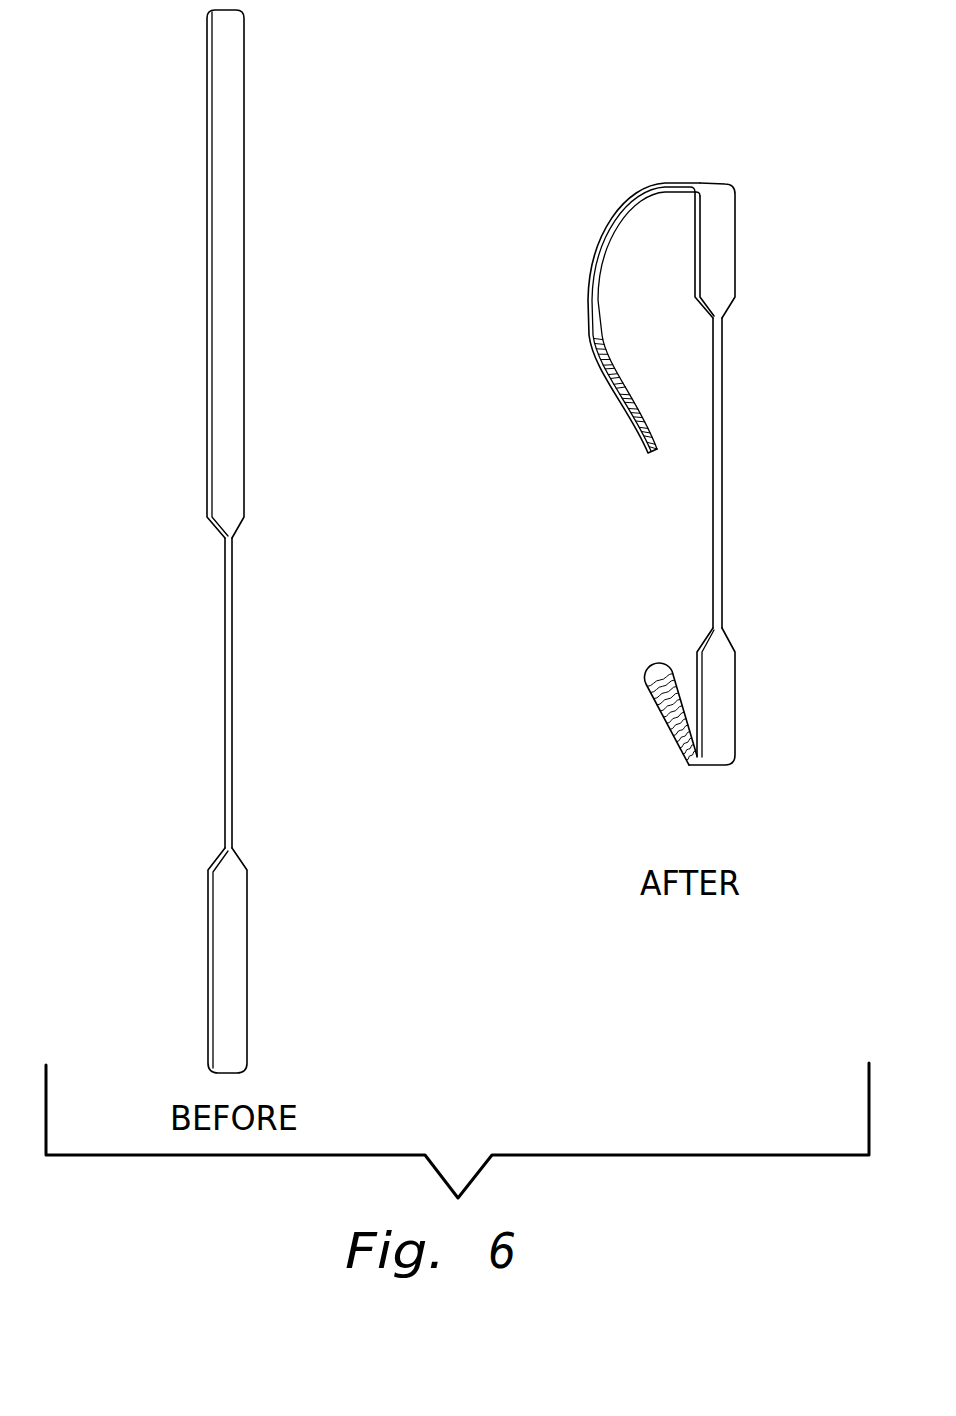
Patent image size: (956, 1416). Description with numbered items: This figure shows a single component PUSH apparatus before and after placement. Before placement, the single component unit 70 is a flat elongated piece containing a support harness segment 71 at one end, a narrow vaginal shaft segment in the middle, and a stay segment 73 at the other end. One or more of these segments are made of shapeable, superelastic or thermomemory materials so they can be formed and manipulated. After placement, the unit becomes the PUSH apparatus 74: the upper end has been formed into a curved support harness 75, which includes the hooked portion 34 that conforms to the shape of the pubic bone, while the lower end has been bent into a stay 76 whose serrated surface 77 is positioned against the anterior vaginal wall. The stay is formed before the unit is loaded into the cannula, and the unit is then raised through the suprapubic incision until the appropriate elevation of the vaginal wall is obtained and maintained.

The single component unit 70 is at (230, 541).
The support harness segment 71 is at (244, 310).
The stay segment 73 is at (248, 921).
The PUSH apparatus 74 is at (713, 473).
The support harness 75 is at (735, 243).
The stay 76 is at (680, 745).
The serrated surface 77 is at (657, 672).
The hook 34 is at (632, 408).